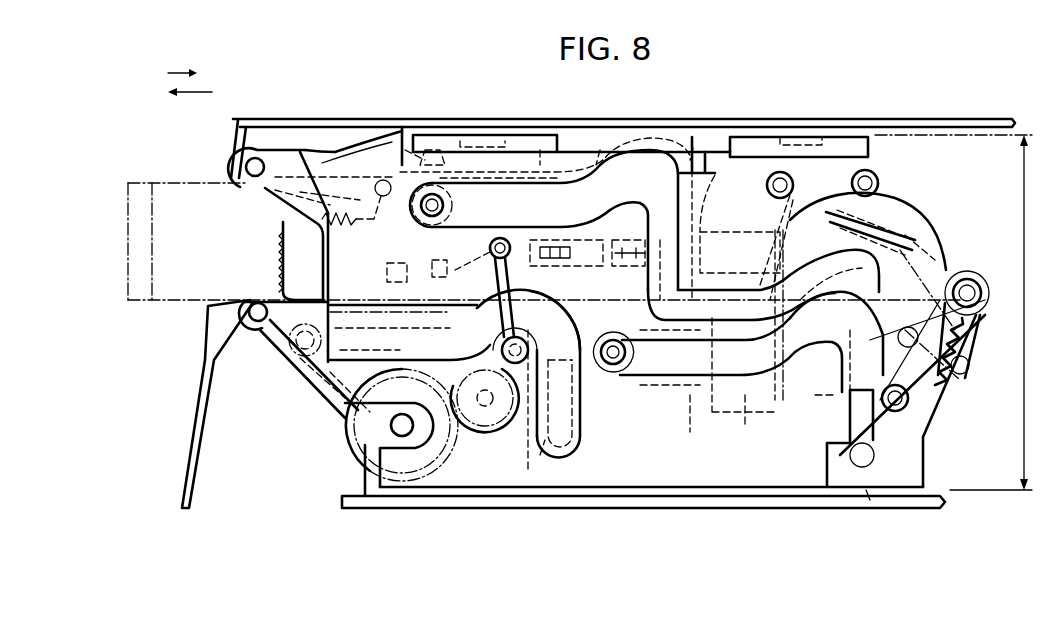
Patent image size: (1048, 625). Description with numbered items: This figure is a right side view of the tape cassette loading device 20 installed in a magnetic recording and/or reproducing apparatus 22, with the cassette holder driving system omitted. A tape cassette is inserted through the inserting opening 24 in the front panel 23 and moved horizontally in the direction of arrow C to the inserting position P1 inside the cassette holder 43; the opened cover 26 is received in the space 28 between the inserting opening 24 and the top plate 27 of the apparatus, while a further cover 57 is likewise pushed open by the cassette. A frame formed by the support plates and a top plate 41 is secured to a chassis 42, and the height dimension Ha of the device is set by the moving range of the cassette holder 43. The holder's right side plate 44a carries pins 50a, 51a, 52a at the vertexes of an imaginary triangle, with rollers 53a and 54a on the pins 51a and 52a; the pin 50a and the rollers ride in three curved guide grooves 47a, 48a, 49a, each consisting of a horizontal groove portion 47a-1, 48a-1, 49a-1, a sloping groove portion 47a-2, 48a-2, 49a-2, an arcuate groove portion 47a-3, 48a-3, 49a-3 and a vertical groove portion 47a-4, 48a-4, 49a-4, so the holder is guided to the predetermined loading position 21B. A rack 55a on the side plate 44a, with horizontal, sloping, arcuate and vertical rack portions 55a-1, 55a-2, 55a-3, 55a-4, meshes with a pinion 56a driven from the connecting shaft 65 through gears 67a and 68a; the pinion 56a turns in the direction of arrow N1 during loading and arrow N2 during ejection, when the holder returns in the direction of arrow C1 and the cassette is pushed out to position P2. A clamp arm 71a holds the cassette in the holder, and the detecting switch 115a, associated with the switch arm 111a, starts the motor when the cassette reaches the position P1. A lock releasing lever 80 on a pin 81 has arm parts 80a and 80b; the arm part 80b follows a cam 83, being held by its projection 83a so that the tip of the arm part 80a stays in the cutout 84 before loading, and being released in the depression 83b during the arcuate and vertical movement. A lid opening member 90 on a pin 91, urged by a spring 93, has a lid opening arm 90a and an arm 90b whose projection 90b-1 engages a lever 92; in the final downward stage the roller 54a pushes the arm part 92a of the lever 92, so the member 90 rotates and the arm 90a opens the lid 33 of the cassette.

The tape cassette loading device 20 is at (798, 80).
The predetermined loading position 21B is at (652, 340).
The magnetic recording and/or reproducing apparatus 22 is at (896, 119).
The front panel 23 is at (186, 420).
The inserting opening 24 is at (237, 182).
The cover 26 is at (333, 140).
The top plate 27 is at (830, 136).
The space 28 is at (393, 130).
The lid 33 is at (882, 207).
The top plate 41 is at (490, 134).
The chassis 42 is at (905, 509).
The cassette holder 43 is at (281, 218).
The right side plate 44a is at (297, 225).
The curved guide groove 47a is at (561, 402).
The horizontal groove portion 47a-1 is at (420, 368).
The sloping groove portion 47a-2 is at (488, 387).
The arcuate groove portion 47a-3 is at (588, 322).
The vertical groove portion 47a-4 is at (566, 440).
The curved guide groove 48a is at (640, 146).
The horizontal groove portion 48a-1 is at (540, 150).
The sloping groove portion 48a-2 is at (600, 150).
The arcuate groove portion 48a-3 is at (693, 148).
The vertical groove portion 48a-4 is at (712, 179).
The curved guide groove 49a is at (740, 395).
The horizontal groove portion 49a-1 is at (690, 395).
The sloping groove portion 49a-2 is at (745, 425).
The arcuate groove portion 49a-3 is at (795, 355).
The vertical groove portion 49a-4 is at (820, 396).
The pin 50a is at (298, 350).
The pin 51a is at (446, 206).
The pin 52a is at (628, 352).
The roller 53a is at (400, 130).
The roller 54a is at (615, 370).
The rack 55a is at (280, 254).
The horizontal rack portion 55a-1 is at (456, 330).
The sloping rack portion 55a-2 is at (352, 408).
The arcuate rack portion 55a-3 is at (312, 385).
The vertical rack portion 55a-4 is at (280, 284).
The pinion 56a is at (531, 458).
The cover 57 is at (262, 328).
The connecting shaft 65 is at (390, 430).
The gear 67a is at (367, 460).
The gear 68a is at (486, 440).
The clamp arm 71a is at (433, 152).
The lock releasing lever 80 is at (621, 243).
The arm part 80a is at (544, 220).
The arm part 80b is at (722, 258).
The pin 81 is at (661, 248).
The cam 83 is at (785, 225).
The projection 83a is at (765, 312).
The depression 83b is at (905, 215).
The cutout 84 is at (572, 266).
The lid opening member 90 is at (952, 272).
The lid opening arm 90a is at (920, 240).
The arm 90b is at (969, 365).
The projection 90b-1 is at (957, 382).
The pin 91 is at (978, 286).
The lever 92 is at (912, 385).
The arm part 92a is at (850, 458).
The spring 93 is at (968, 335).
The switch arm 111a is at (432, 262).
The detecting switch 115a is at (386, 270).
The arrow C is at (171, 73).
The arrow C1 is at (196, 93).
The inserting position P1 is at (157, 267).
The ejected position P2 is at (132, 267).
The arrow N1 is at (560, 374).
The arrow N2 is at (497, 316).
The height dimension Ha is at (956, 312).